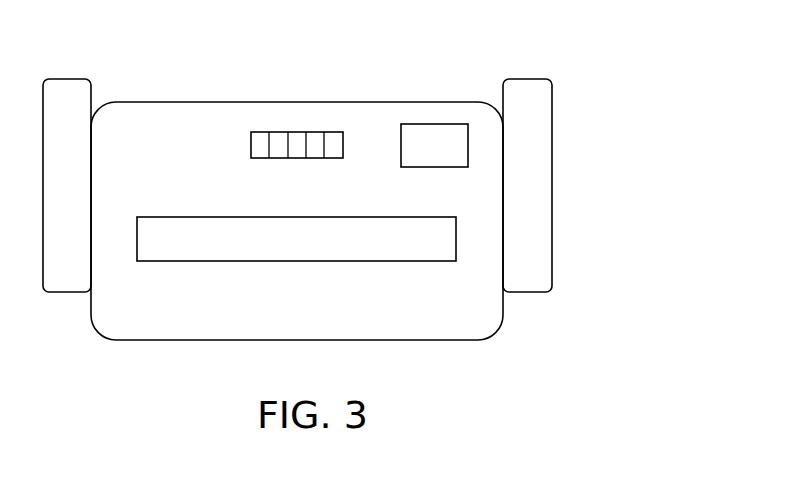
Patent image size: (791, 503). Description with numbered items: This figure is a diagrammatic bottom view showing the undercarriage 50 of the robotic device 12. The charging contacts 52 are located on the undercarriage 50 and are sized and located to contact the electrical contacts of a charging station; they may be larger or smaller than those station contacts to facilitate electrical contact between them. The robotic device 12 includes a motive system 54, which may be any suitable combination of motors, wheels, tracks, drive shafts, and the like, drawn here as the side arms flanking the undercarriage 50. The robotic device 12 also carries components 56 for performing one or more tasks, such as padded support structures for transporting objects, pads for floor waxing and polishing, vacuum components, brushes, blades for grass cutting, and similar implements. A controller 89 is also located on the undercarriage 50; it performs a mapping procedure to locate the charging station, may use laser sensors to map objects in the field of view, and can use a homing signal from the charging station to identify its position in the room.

The robotic device 12 is at (365, 183).
The undercarriage 50 is at (379, 118).
The charging contacts 52 is at (278, 131).
The motive system 54 is at (596, 227).
The components for performing one or more tasks 56 is at (201, 260).
The controller 89 is at (438, 125).